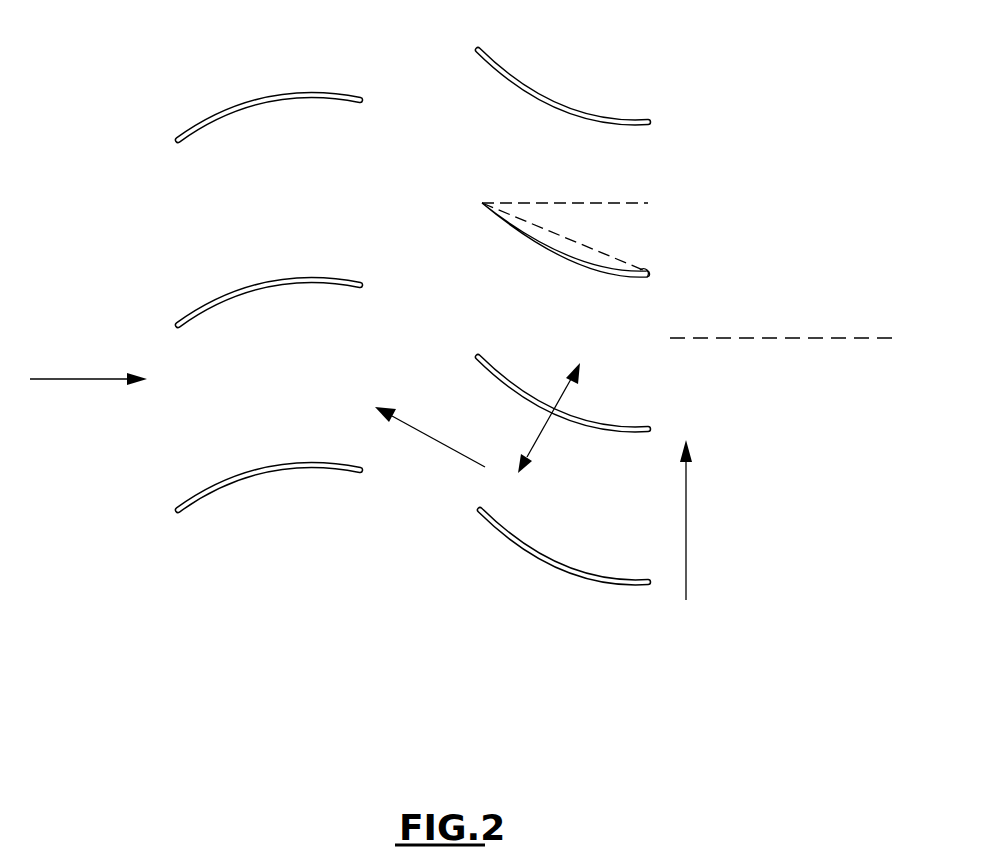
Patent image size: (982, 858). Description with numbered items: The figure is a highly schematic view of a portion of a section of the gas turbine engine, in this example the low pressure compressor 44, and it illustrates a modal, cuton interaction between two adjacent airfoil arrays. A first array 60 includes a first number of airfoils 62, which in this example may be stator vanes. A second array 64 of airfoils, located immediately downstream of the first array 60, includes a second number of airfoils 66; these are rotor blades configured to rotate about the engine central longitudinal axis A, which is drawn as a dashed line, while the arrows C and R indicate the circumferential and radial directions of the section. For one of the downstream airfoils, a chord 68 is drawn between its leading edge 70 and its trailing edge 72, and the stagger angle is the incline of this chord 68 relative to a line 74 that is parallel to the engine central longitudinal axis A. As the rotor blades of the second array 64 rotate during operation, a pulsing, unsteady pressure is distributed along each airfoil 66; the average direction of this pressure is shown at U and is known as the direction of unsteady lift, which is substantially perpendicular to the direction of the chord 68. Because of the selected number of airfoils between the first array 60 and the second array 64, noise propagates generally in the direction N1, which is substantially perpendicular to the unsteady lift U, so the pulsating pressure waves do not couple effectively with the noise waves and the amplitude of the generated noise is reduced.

The low pressure compressor 44 is at (781, 238).
The first array 60 is at (269, 342).
The airfoils 62 is at (262, 468).
The second array 64 is at (571, 393).
The airfoils 66 is at (556, 560).
The chord 68 is at (578, 246).
The leading edge 70 is at (481, 204).
The trailing edge 72 is at (650, 277).
The line 74 is at (600, 203).
The engine central longitudinal axis A is at (823, 338).
The circumferential direction C is at (80, 380).
The radial direction R is at (686, 512).
The direction of unsteady lift U is at (542, 440).
The noise wave propagation direction N1 is at (445, 448).